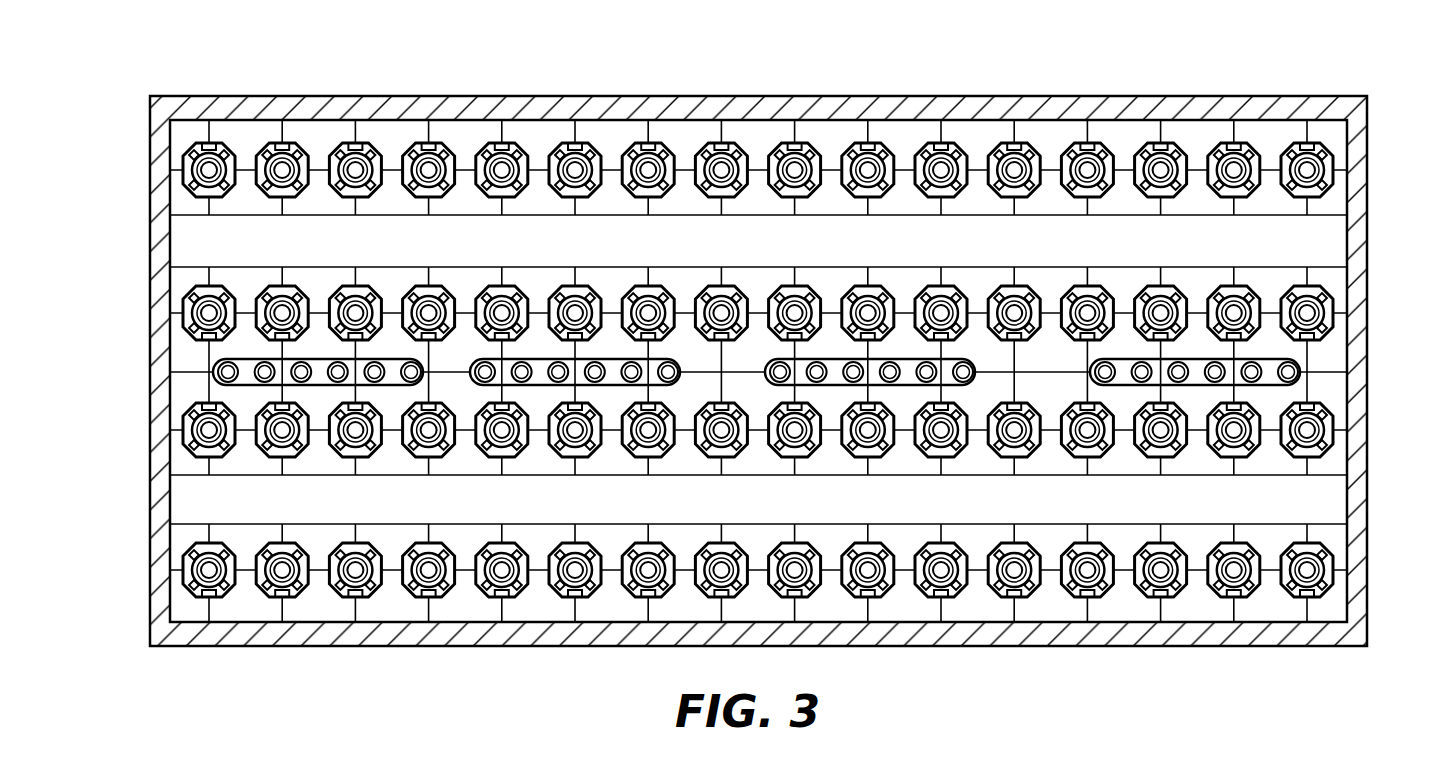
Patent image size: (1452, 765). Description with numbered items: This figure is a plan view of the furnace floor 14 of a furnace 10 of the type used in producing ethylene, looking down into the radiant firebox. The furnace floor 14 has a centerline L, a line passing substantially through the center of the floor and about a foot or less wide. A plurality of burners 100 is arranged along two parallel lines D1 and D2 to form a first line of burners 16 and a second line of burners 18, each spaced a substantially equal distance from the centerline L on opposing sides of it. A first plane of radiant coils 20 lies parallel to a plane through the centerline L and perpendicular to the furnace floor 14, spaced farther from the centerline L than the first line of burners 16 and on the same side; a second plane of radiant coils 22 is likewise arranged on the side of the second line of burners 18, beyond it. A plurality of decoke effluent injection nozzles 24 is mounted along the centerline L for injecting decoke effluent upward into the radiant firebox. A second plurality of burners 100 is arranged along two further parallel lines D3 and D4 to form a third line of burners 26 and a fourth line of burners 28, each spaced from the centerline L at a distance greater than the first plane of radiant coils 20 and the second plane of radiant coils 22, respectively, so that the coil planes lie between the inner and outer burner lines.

The furnace 10 is at (770, 45).
The furnace floor 14 is at (774, 214).
The first line of burners 16 is at (1197, 312).
The second line of burners 18 is at (1193, 433).
The first plane of radiant coils 20 is at (773, 250).
The second plane of radiant coils 22 is at (773, 514).
The decoke effluent injection nozzles 24 is at (565, 383).
The third line of burners 26 is at (1127, 169).
The fourth line of burners 28 is at (1196, 572).
The burners 100 is at (322, 188).
The parallel line D1 is at (182, 315).
The parallel line D2 is at (182, 432).
The parallel line D3 is at (182, 170).
The parallel line D4 is at (182, 570).
The centerline L is at (759, 377).